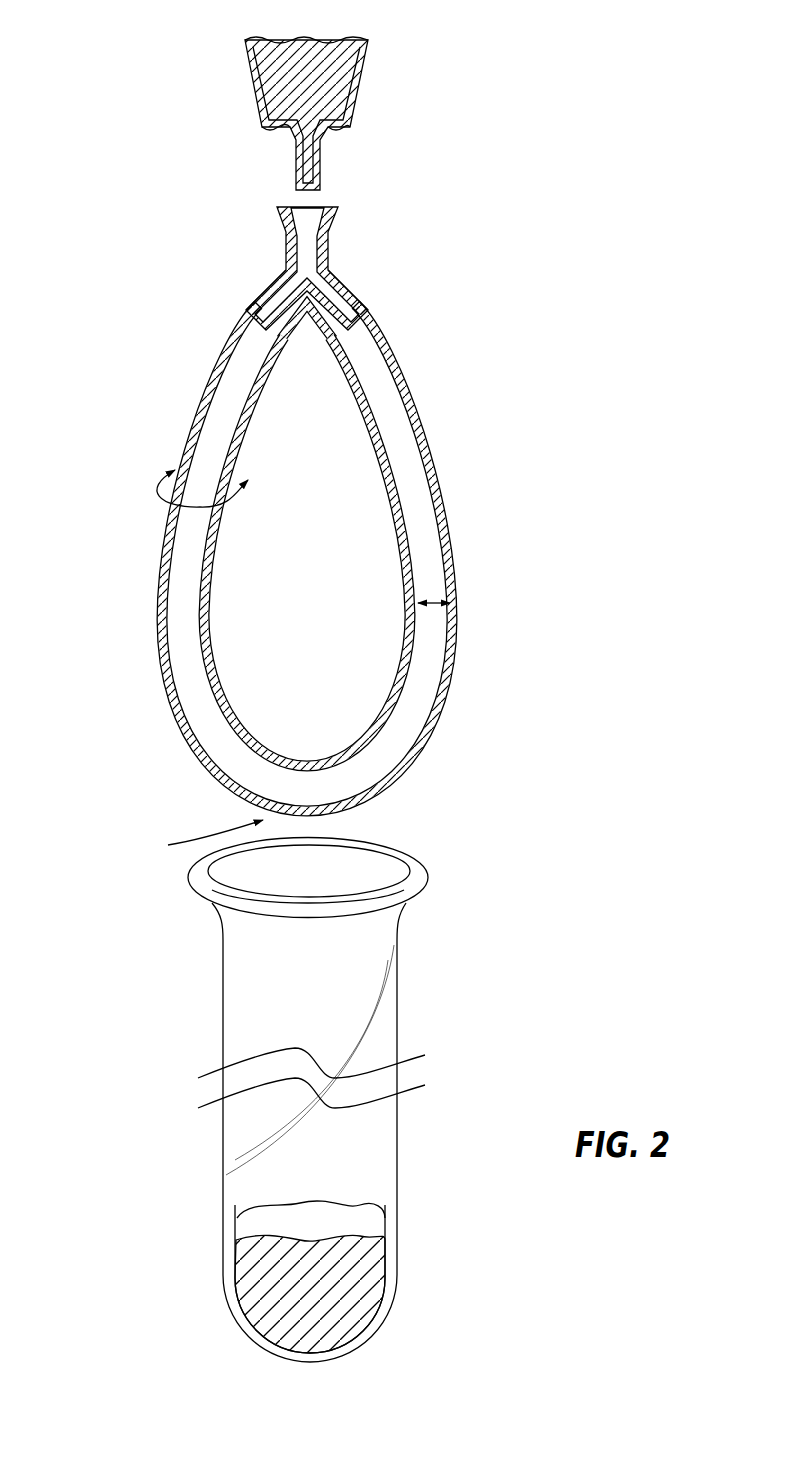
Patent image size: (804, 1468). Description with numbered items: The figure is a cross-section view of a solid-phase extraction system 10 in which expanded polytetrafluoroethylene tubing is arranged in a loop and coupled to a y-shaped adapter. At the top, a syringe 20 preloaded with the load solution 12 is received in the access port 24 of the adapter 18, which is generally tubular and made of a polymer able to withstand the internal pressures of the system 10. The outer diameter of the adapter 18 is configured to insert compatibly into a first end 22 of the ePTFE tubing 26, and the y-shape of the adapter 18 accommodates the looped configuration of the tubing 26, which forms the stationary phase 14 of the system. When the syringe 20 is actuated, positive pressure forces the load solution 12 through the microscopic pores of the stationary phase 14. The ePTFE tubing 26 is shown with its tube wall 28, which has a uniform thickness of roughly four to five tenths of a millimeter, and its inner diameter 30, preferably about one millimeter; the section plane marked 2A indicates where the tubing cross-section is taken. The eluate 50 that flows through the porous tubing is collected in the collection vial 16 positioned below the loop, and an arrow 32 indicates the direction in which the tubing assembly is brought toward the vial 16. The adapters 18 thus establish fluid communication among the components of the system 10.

The solid-phase extraction system 10 is at (549, 243).
The load solution 12 is at (327, 78).
The stationary phase 14 is at (507, 512).
The collection vial 16 is at (407, 998).
The adapter 18 is at (344, 232).
The syringe 20 is at (364, 73).
The first end of the ePTFE tubing 22 is at (251, 294).
The access port 24 is at (327, 196).
The ePTFE tubing 26 is at (285, 198).
The tube wall 28 is at (434, 445).
The inner diameter 30 is at (438, 602).
The insertion direction arrow 32 is at (201, 838).
The eluate 50 is at (373, 1262).
The section line 2A is at (207, 478).